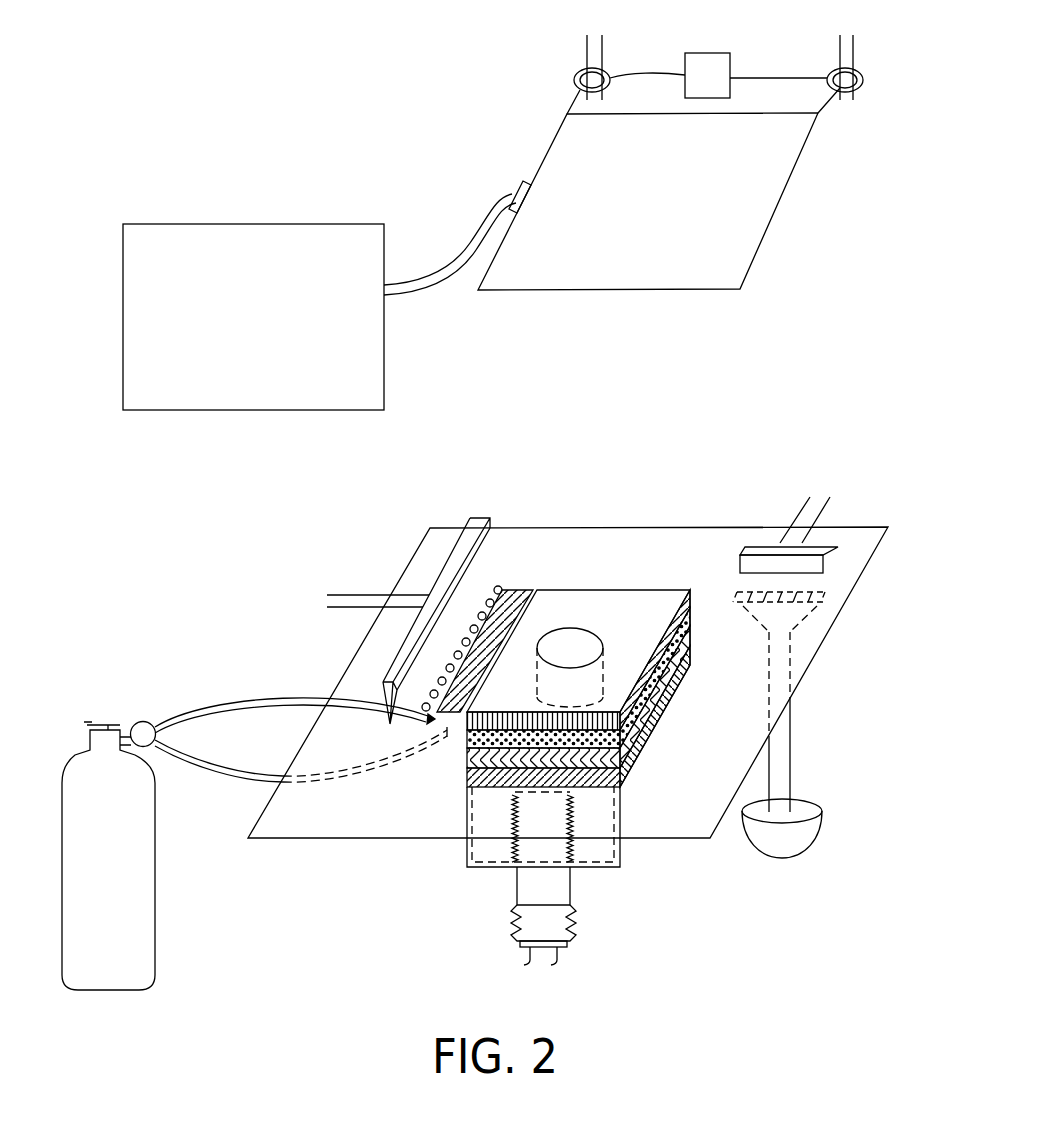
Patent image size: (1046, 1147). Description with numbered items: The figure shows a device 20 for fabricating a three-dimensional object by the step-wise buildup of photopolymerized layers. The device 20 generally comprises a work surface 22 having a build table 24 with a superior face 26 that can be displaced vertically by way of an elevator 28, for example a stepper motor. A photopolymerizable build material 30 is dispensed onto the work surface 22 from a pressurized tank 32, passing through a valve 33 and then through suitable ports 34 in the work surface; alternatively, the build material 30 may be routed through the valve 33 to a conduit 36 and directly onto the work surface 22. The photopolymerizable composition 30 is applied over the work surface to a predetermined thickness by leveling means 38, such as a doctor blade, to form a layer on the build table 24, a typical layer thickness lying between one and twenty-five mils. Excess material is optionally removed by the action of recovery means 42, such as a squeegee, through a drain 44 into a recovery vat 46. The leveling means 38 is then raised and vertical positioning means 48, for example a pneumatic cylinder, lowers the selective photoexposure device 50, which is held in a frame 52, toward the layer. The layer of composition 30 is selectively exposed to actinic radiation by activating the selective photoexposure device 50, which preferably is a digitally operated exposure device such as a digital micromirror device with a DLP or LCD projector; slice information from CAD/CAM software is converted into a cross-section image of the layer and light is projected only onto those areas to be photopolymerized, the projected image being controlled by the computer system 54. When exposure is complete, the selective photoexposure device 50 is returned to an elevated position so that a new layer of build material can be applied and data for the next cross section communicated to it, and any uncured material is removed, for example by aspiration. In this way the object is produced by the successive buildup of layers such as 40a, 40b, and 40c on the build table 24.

The device 20 is at (360, 123).
The work surface 22 is at (843, 578).
The build table 24 is at (623, 778).
The superior face 26 is at (592, 770).
The elevator 28 is at (572, 892).
The photopolymerizable build material 30 is at (443, 713).
The pressurized tank 32 is at (155, 945).
The valve 33 is at (140, 722).
The ports 34 is at (430, 716).
The conduit 36 is at (190, 710).
The leveling means 38 is at (390, 684).
The layer 40a is at (607, 727).
The layer 40b is at (625, 740).
The layer 40c is at (628, 760).
The recovery means 42 is at (828, 557).
The drain 44 is at (823, 598).
The recovery vat 46 is at (818, 842).
The vertical positioning means 48 is at (731, 83).
The selective photoexposure device 50 is at (785, 200).
The frame 52 is at (855, 52).
The computer system 54 is at (386, 366).